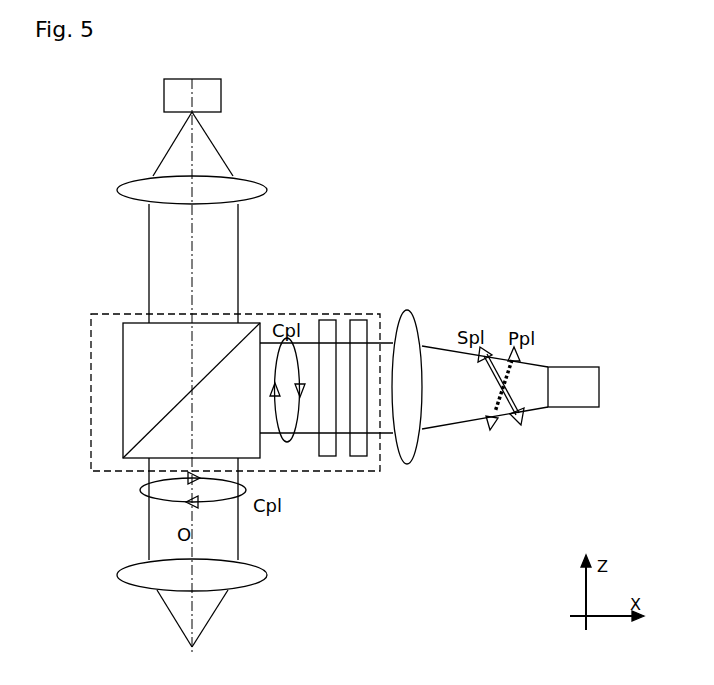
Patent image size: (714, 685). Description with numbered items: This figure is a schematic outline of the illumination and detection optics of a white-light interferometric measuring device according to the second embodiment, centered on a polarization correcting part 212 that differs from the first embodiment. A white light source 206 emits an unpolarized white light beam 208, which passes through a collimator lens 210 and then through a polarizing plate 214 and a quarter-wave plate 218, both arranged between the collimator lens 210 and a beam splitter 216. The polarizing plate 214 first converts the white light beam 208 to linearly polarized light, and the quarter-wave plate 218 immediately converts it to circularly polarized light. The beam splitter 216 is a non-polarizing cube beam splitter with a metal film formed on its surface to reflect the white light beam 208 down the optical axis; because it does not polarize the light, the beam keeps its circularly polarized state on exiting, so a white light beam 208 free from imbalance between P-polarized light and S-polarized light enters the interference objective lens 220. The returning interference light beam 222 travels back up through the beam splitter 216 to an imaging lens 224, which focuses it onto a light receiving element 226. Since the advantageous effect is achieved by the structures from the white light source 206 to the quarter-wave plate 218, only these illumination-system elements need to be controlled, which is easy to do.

The white light source 206 is at (572, 380).
The white light beam 208 is at (462, 424).
The collimator lens 210 is at (407, 331).
The polarization correcting part 212 is at (320, 314).
The polarizing plate 214 is at (362, 455).
The beam splitter 216 is at (151, 341).
The quarter-wave plate 218 is at (329, 455).
The interference objective lens 220 is at (268, 578).
The interference light beam 222 is at (238, 243).
The imaging lens 224 is at (266, 187).
The light receiving element 226 is at (218, 100).